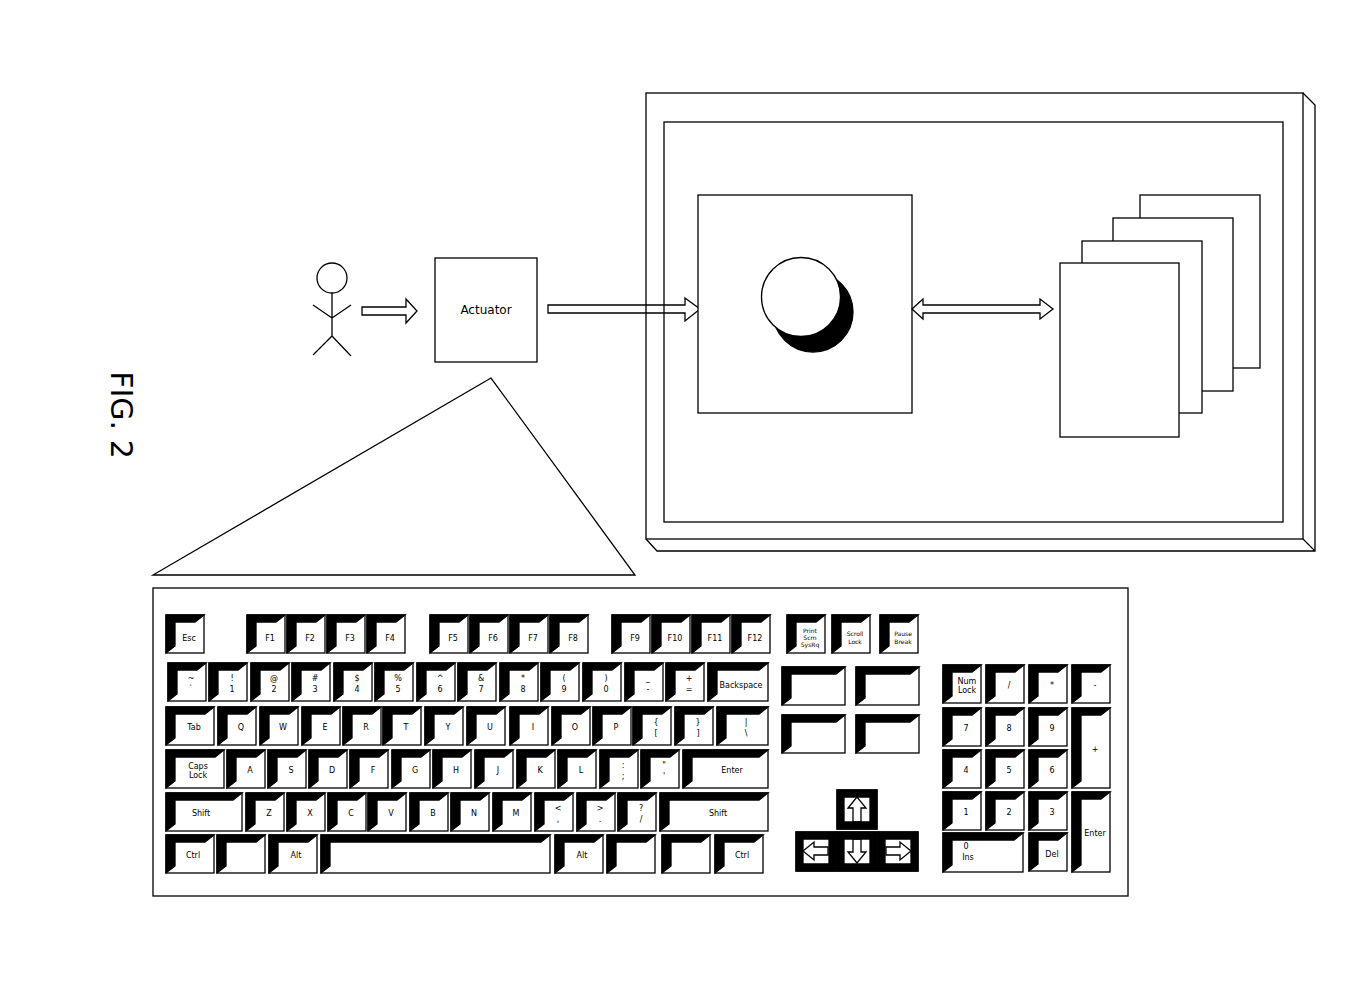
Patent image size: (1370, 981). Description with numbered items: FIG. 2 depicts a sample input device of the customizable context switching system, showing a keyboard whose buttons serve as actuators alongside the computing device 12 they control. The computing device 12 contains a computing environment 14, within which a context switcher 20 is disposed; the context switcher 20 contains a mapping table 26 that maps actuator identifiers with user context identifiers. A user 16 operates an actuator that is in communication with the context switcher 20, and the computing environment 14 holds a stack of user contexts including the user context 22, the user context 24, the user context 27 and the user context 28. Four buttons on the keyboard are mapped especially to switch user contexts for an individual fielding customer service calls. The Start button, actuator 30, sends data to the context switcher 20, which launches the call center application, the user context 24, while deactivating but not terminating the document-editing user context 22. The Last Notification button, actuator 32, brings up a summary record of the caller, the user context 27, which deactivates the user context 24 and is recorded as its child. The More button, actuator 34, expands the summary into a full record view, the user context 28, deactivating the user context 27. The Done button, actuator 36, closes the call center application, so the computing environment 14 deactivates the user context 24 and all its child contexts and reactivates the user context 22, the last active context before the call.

The computing device 12 is at (1282, 83).
The computing environment 14 is at (1283, 251).
The user 16 is at (334, 253).
The context switcher 20 is at (912, 212).
The user context 22 is at (1110, 226).
The user context 24 is at (1057, 271).
The mapping table 26 is at (847, 280).
The user context 27 is at (1140, 198).
The user context 28 is at (1080, 248).
The actuator 30 is at (803, 665).
The actuator 32 is at (923, 660).
The actuator 34 is at (815, 757).
The actuator 36 is at (898, 757).